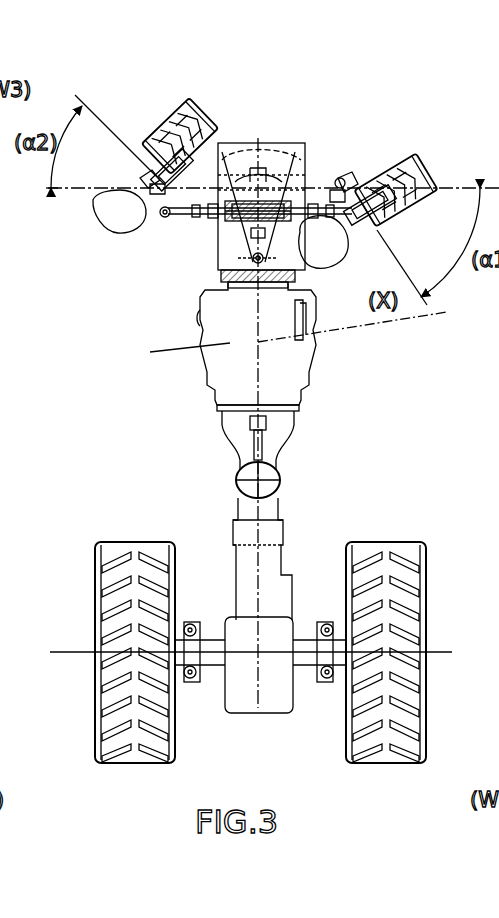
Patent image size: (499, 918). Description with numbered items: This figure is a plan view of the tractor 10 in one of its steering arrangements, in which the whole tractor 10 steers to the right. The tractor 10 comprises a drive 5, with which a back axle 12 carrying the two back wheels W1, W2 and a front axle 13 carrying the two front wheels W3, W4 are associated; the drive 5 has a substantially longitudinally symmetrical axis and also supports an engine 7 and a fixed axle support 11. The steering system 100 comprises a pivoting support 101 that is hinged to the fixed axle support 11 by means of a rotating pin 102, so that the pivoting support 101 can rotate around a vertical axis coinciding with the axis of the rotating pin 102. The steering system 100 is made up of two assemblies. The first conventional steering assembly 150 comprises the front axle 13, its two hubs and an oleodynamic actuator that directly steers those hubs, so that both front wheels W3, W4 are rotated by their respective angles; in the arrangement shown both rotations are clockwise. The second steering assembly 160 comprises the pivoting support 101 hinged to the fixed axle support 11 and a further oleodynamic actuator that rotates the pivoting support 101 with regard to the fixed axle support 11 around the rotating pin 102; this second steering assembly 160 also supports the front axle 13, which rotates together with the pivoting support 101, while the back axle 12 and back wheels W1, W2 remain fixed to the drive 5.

The drive 5 is at (250, 523).
The engine 7 is at (235, 343).
The tractor 10 is at (332, 500).
The fixed axle support 11 is at (238, 226).
The back axle 12 is at (198, 658).
The front axle 13 is at (204, 180).
The steering system 100 is at (306, 165).
The pivoting support 101 is at (320, 166).
The rotating pin 102 is at (236, 264).
The first conventional steering assembly 150 is at (155, 225).
The second steering assembly 160 is at (346, 190).
The back wheel W1 is at (375, 768).
The back wheel W2 is at (125, 768).
The front wheel W3 is at (422, 160).
The front wheel W4 is at (158, 126).